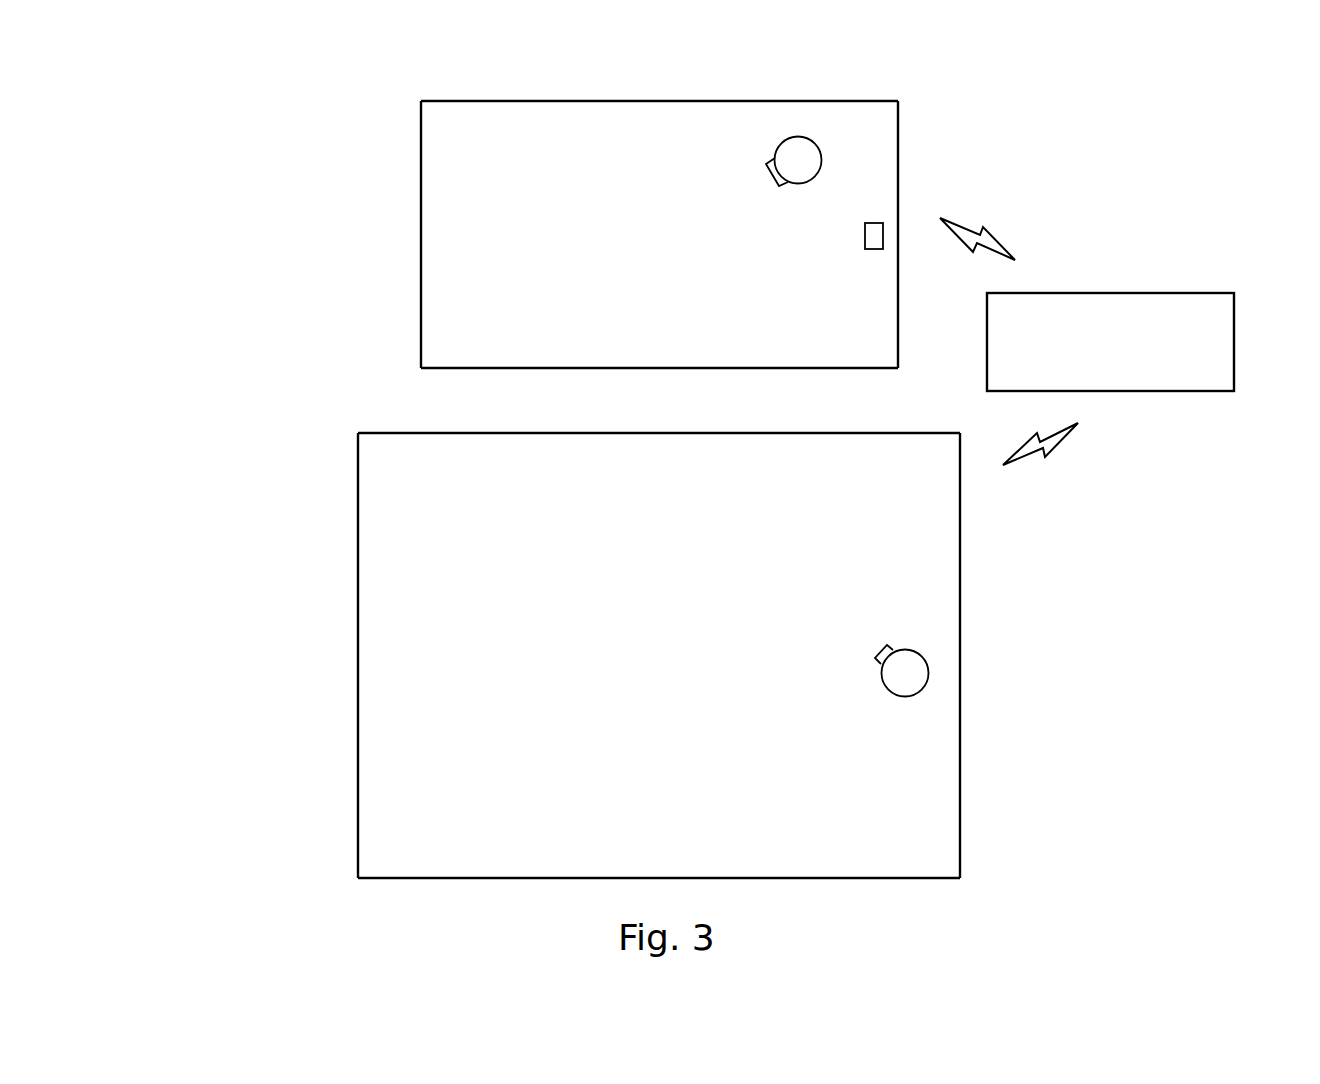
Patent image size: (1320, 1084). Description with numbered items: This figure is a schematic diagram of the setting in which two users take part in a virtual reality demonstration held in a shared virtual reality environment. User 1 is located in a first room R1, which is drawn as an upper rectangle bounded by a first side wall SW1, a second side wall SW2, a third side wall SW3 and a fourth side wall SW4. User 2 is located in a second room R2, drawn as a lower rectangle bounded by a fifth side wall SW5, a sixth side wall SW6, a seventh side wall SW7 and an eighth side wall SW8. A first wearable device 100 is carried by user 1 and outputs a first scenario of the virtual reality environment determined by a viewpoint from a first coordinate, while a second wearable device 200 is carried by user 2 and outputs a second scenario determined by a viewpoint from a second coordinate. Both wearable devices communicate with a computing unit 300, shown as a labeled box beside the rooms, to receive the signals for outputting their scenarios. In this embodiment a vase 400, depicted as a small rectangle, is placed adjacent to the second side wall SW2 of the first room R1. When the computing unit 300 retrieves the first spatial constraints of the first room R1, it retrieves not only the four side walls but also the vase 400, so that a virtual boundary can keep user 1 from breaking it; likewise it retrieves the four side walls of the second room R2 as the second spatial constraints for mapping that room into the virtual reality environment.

The first room R1 is at (627, 235).
The second room R2 is at (623, 652).
The first side wall SW1 is at (661, 101).
The second side wall SW2 is at (898, 153).
The third side wall SW3 is at (421, 150).
The fourth side wall SW4 is at (660, 368).
The fifth side wall SW5 is at (850, 433).
The sixth side wall SW6 is at (960, 743).
The seventh side wall SW7 is at (358, 742).
The eighth side wall SW8 is at (851, 878).
The user 1 is at (798, 137).
The user 2 is at (928, 662).
The first wearable device 100 is at (777, 187).
The second wearable device 200 is at (876, 660).
The computing unit 300 is at (1133, 372).
The vase 400 is at (878, 223).